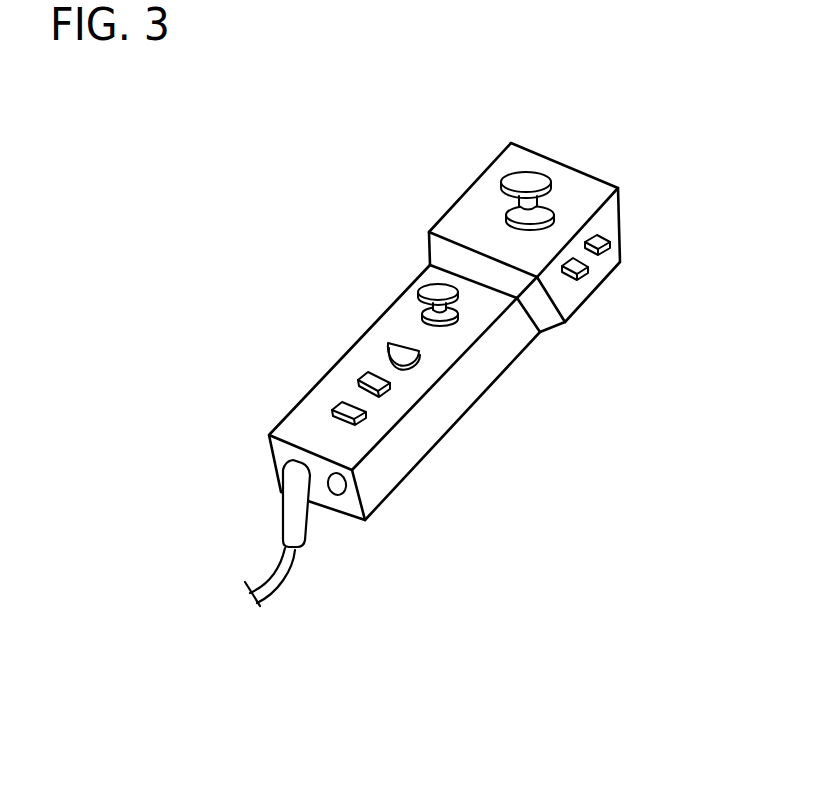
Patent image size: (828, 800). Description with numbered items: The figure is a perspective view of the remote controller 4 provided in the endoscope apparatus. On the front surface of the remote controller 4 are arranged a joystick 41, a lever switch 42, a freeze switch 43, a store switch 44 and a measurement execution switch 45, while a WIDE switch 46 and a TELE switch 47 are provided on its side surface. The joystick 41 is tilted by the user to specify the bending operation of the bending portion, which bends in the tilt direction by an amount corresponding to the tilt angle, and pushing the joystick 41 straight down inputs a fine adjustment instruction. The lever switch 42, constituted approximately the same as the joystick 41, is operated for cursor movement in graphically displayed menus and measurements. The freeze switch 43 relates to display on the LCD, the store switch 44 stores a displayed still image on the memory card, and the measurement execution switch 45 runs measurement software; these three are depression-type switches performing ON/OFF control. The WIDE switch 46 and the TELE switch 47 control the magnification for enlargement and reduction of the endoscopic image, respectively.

The remote controller 4 is at (405, 168).
The joystick 41 is at (570, 187).
The lever switch 42 is at (479, 307).
The freeze switch 43 is at (439, 363).
The store switch 44 is at (410, 399).
The measurement execution switch 45 is at (380, 426).
The WIDE switch 46 is at (619, 245).
The TELE switch 47 is at (600, 277).